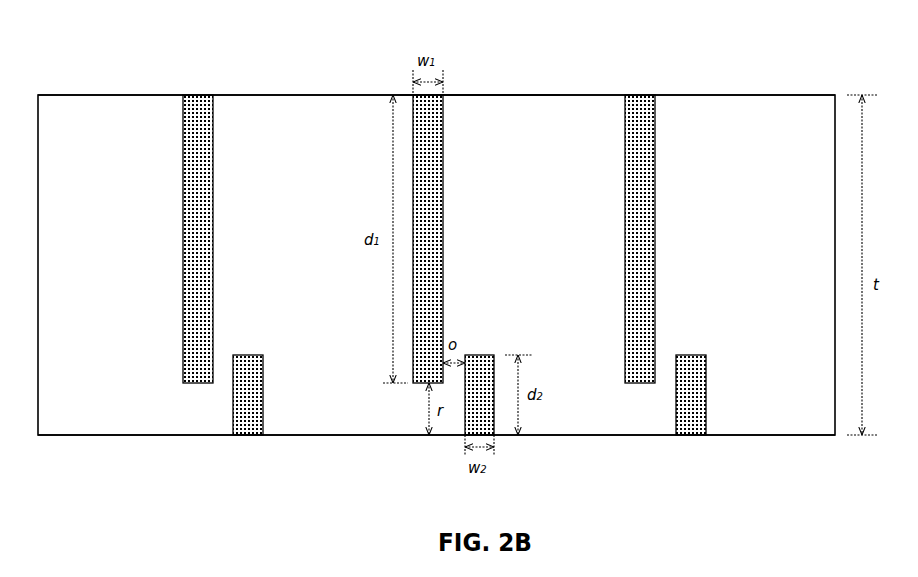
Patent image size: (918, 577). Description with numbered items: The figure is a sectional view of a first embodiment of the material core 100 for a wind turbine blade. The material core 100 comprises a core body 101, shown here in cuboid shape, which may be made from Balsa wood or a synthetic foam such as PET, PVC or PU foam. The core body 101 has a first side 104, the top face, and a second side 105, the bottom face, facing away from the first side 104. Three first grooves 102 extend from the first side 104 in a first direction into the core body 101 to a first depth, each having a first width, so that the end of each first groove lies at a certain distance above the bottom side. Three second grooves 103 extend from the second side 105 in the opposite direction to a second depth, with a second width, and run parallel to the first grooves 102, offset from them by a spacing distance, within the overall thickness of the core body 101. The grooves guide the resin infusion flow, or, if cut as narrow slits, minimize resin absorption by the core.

The material core 100 is at (436, 234).
The core body 101 is at (737, 80).
The first grooves 102 is at (448, 218).
The second grooves 103 is at (268, 393).
The first side 104 is at (483, 88).
The second side 105 is at (585, 440).